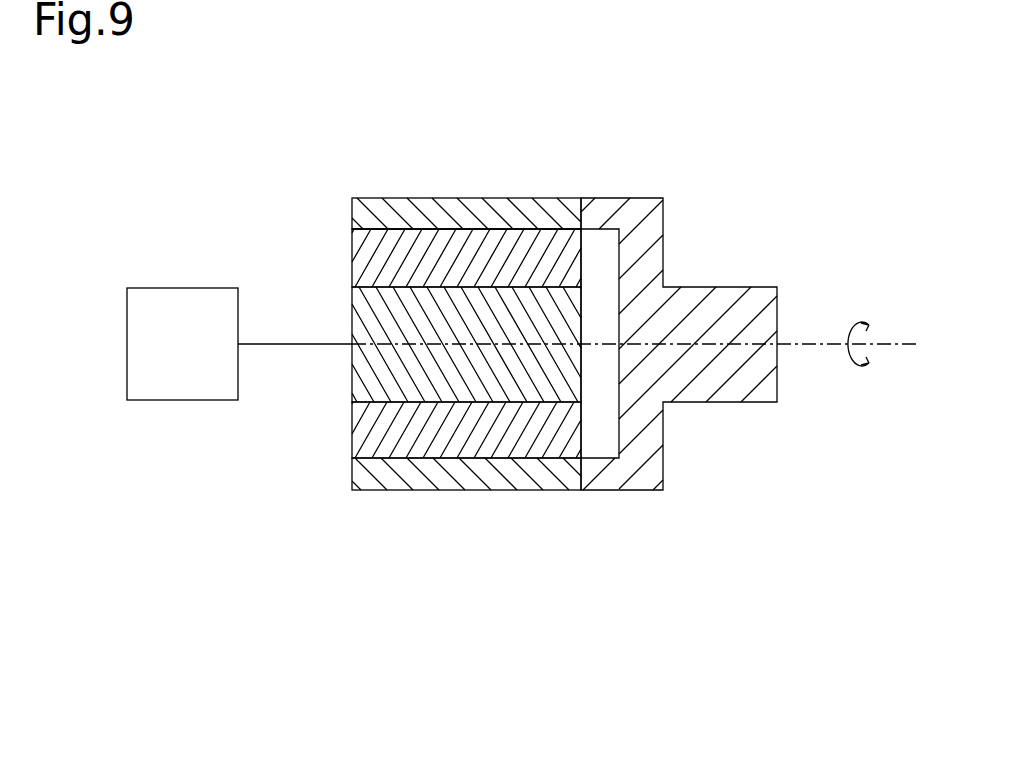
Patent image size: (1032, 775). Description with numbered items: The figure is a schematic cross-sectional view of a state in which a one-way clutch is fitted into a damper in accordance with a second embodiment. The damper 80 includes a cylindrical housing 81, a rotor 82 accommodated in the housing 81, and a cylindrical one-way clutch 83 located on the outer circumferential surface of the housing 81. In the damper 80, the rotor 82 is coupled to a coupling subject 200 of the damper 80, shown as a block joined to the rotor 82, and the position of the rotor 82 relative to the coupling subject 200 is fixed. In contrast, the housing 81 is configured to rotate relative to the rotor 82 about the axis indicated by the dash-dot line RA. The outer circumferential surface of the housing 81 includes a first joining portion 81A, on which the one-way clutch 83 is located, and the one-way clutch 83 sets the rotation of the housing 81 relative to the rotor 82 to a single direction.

The damper 80 is at (596, 156).
The housing 81 is at (352, 250).
The first joining portion 81A is at (466, 228).
The rotor 82 is at (352, 378).
The one-way clutch 83 is at (352, 463).
The coupling subject 200 is at (186, 288).
The rotation axis RA is at (733, 287).